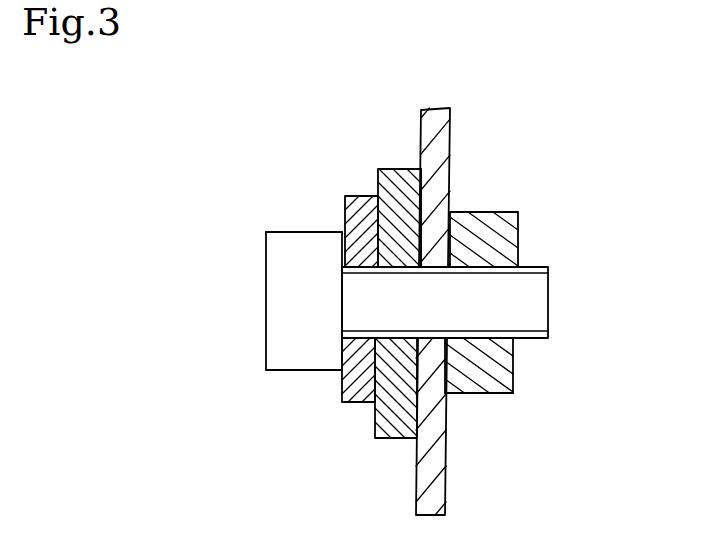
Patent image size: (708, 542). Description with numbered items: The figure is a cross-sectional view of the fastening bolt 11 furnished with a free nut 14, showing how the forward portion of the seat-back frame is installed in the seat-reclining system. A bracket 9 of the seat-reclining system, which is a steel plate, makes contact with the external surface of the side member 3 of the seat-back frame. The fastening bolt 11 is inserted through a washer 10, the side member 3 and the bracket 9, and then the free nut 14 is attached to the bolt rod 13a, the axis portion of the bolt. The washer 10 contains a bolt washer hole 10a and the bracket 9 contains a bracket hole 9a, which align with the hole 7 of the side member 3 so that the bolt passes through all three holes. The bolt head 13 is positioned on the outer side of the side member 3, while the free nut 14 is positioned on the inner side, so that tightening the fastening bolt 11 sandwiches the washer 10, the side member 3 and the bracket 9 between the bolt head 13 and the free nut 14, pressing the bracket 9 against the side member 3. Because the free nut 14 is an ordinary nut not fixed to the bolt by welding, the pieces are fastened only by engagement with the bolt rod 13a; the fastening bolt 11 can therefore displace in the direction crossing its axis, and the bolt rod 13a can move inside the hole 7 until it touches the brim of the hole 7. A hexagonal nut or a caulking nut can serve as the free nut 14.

The side member 3 is at (455, 118).
The hole 7 is at (507, 230).
The bracket 9 is at (401, 169).
The bracket hole 9a is at (422, 218).
The washer 10 is at (360, 195).
The bolt washer hole 10a is at (347, 221).
The fastening bolt 11 is at (271, 231).
The bolt head 13 is at (285, 303).
The bolt rod 13a is at (527, 312).
The free nut 14 is at (513, 392).